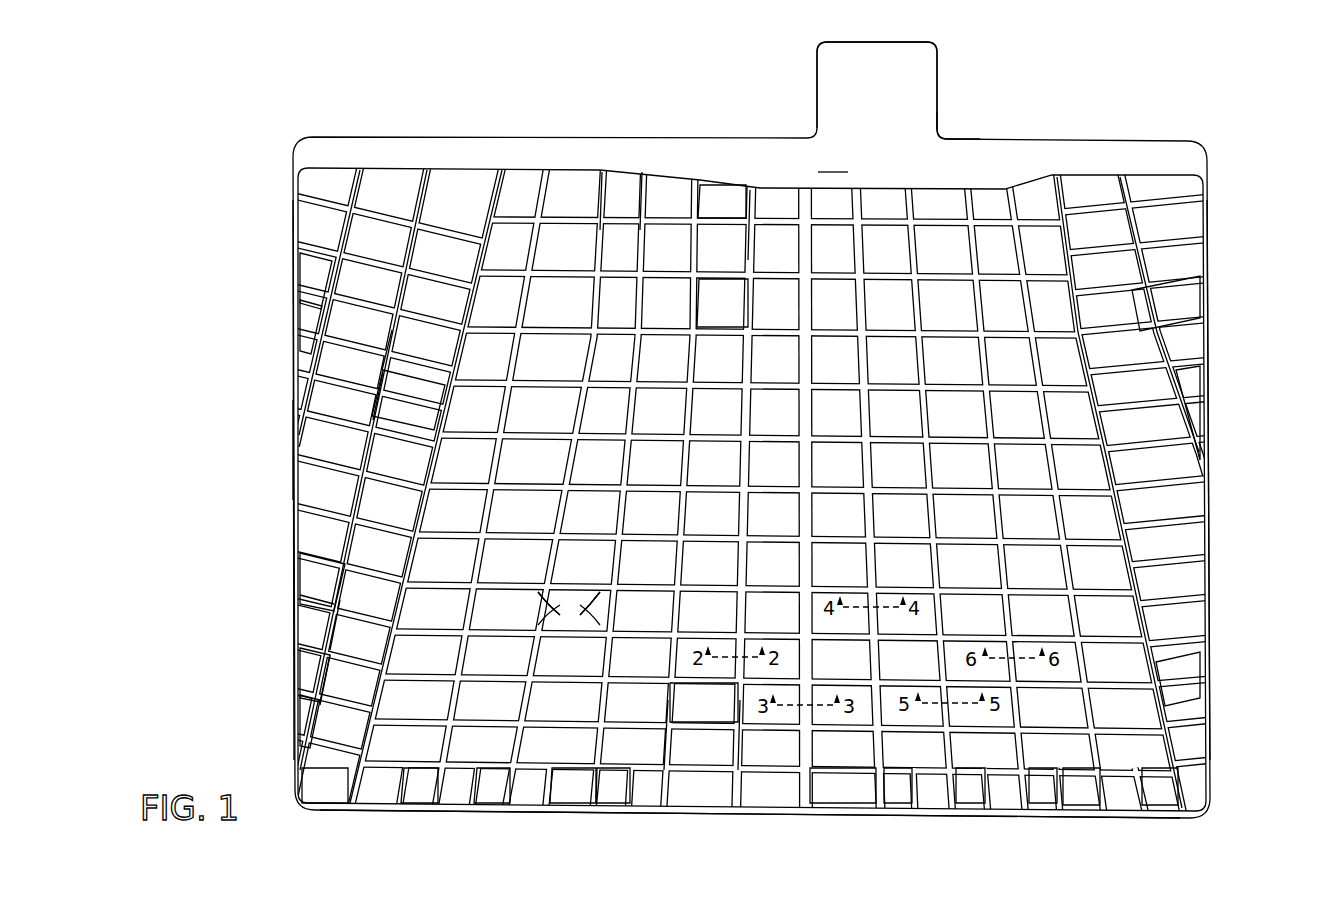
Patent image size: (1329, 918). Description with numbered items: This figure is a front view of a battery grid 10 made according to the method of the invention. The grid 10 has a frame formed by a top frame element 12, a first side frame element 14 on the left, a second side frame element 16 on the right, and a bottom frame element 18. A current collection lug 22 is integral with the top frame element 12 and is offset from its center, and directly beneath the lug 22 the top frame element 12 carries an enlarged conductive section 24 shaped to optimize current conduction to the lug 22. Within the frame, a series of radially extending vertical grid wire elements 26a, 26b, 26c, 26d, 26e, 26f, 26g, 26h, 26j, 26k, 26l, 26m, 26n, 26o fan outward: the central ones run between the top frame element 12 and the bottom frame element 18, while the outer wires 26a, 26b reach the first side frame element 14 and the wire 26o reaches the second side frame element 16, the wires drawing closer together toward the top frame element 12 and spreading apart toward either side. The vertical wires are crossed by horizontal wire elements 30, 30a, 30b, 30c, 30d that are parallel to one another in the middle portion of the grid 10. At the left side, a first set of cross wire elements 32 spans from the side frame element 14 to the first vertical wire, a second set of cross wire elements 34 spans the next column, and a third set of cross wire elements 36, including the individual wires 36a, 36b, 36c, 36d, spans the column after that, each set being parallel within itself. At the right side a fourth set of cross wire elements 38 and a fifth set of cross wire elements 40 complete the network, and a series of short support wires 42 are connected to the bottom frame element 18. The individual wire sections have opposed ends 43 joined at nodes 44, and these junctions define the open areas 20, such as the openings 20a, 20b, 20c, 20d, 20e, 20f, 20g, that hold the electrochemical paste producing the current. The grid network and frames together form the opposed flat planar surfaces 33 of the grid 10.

The grid 10 is at (160, 324).
The top frame element 12 is at (545, 148).
The first side frame element 14 is at (293, 470).
The second side frame element 16 is at (1207, 482).
The bottom frame element 18 is at (743, 814).
The open areas 20 is at (320, 735).
The open area 20a is at (724, 302).
The open area 20b is at (717, 706).
The open area 20c is at (420, 368).
The open area 20d is at (320, 660).
The open area 20e is at (312, 325).
The open area 20f is at (305, 600).
The open area 20g is at (1195, 392).
The current collection lug 22 is at (885, 50).
The enlarged conductive section 24 is at (890, 137).
The vertical grid wire element 26a is at (323, 297).
The vertical grid wire element 26b is at (330, 582).
The vertical grid wire element 26c is at (352, 777).
The vertical grid wire element 26d is at (440, 742).
The vertical grid wire element 26e is at (512, 742).
The vertical grid wire element 26f is at (588, 742).
The vertical grid wire element 26g is at (652, 750).
The vertical grid wire element 26h is at (738, 218).
The vertical grid wire element 26j is at (880, 748).
The vertical grid wire element 26k is at (958, 748).
The vertical grid wire element 26l is at (1027, 750).
The vertical grid wire element 26m is at (1122, 792).
The vertical grid wire element 26n is at (1175, 680).
The vertical grid wire element 26o is at (1160, 313).
The horizontal wire elements 30 is at (616, 250).
The horizontal wire element 30a is at (643, 200).
The horizontal wire element 30b is at (730, 335).
The horizontal wire element 30c is at (697, 697).
The horizontal wire element 30d is at (692, 698).
The first set of cross wire elements 32 is at (325, 190).
The planar surfaces 33 is at (833, 158).
The second set of cross wire elements 34 is at (397, 190).
The third set of cross wire elements 36 is at (462, 208).
The cross wire element 36a is at (392, 348).
The cross wire element 36b is at (393, 404).
The cross wire element 36c is at (345, 622).
The cross wire element 36d is at (320, 700).
The fourth set of cross wire elements 38 is at (1080, 210).
The fifth set of cross wire elements 40 is at (1155, 198).
The short support wires 42 is at (1100, 792).
The opposed ends 43 is at (569, 608).
The nodes 44 is at (600, 598).